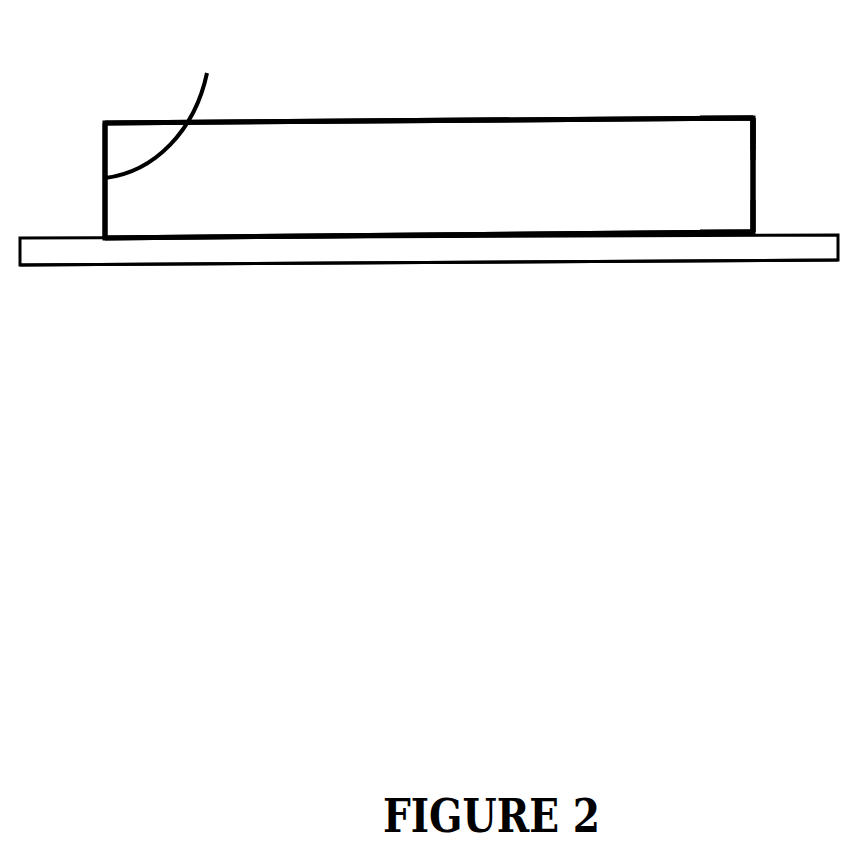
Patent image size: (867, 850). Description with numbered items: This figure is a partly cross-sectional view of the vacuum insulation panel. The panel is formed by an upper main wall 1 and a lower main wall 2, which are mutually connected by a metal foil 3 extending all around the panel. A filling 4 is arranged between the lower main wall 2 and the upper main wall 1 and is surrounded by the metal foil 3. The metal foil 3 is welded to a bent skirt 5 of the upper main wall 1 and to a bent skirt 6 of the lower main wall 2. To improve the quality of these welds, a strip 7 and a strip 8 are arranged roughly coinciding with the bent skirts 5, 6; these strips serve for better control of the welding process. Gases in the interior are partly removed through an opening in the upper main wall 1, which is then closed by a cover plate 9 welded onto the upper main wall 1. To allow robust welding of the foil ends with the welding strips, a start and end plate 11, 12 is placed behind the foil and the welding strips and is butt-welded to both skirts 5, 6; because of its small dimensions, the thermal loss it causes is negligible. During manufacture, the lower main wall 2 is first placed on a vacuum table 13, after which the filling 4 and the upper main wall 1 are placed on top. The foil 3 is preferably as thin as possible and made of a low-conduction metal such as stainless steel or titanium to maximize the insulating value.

The upper main wall 1 is at (630, 117).
The lower main wall 2 is at (625, 240).
The metal foil 3 is at (755, 167).
The filling 4 is at (368, 187).
The bent skirt 5 is at (753, 118).
The bent skirt 6 is at (753, 232).
The strip 7 is at (755, 132).
The strip 8 is at (755, 227).
The cover plate 9 is at (442, 117).
The start and end plate 11 is at (105, 162).
The start and end plate 12 is at (169, 105).
The vacuum table 13 is at (302, 250).